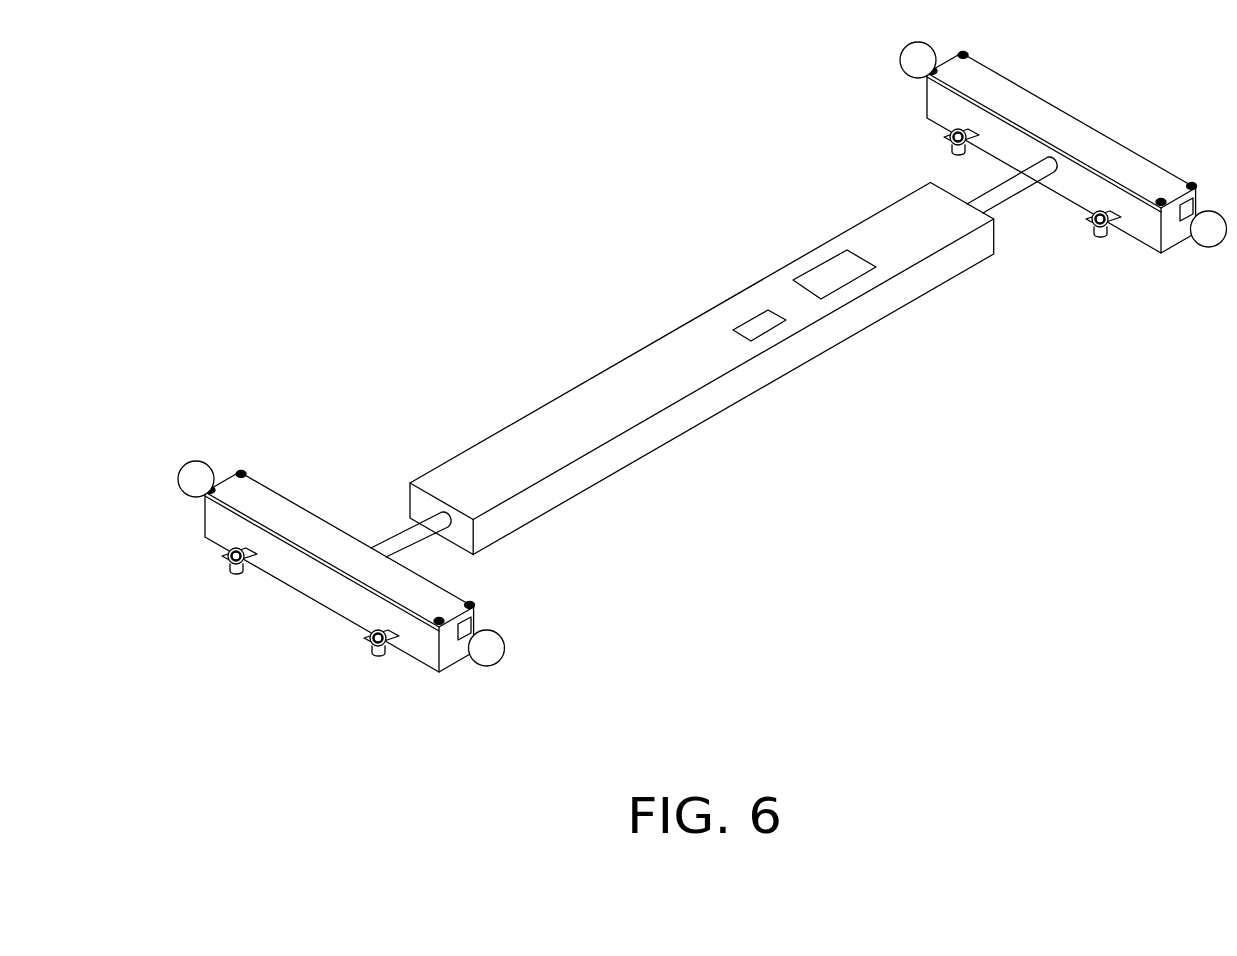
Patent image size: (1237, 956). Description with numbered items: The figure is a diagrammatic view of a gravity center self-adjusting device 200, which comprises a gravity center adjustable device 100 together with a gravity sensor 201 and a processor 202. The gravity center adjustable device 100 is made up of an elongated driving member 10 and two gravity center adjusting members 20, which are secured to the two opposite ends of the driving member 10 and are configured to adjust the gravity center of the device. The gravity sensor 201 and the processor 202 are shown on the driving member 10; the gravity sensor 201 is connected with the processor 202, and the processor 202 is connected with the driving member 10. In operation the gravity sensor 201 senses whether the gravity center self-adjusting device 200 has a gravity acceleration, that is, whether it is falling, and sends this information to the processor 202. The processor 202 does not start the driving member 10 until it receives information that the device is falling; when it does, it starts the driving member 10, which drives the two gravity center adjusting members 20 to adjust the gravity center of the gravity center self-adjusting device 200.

The gravity center self-adjusting device 200 is at (573, 100).
The gravity center adjustable device 100 is at (1190, 330).
The driving member 10 is at (736, 369).
The gravity center adjusting member 20 is at (1148, 230).
The gravity sensor 201 is at (841, 277).
The processor 202 is at (760, 328).